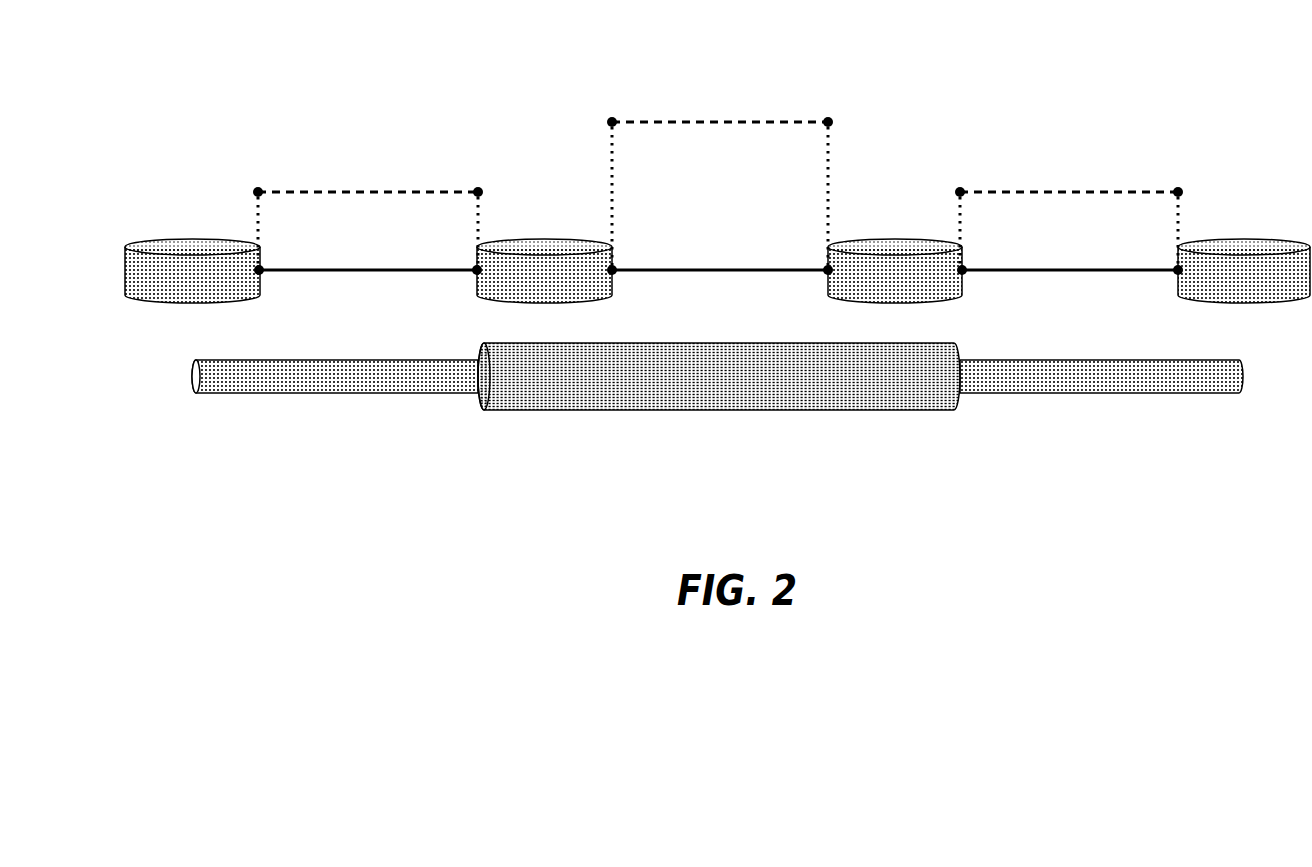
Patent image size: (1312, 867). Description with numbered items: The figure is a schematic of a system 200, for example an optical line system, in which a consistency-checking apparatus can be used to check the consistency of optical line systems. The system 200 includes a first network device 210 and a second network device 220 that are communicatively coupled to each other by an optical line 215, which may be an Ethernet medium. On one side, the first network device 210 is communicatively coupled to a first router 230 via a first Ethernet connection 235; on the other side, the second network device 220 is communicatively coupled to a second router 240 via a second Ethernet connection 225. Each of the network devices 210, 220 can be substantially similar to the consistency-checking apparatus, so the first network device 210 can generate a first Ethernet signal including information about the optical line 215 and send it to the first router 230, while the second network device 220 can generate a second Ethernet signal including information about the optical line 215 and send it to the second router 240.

The system 200 is at (432, 92).
The first network device 210 is at (544, 246).
The optical line 215 is at (720, 190).
The second network device 220 is at (895, 243).
The second Ethernet connection 225 is at (1069, 242).
The first router 230 is at (192, 246).
The first Ethernet connection 235 is at (368, 242).
The second router 240 is at (1244, 246).